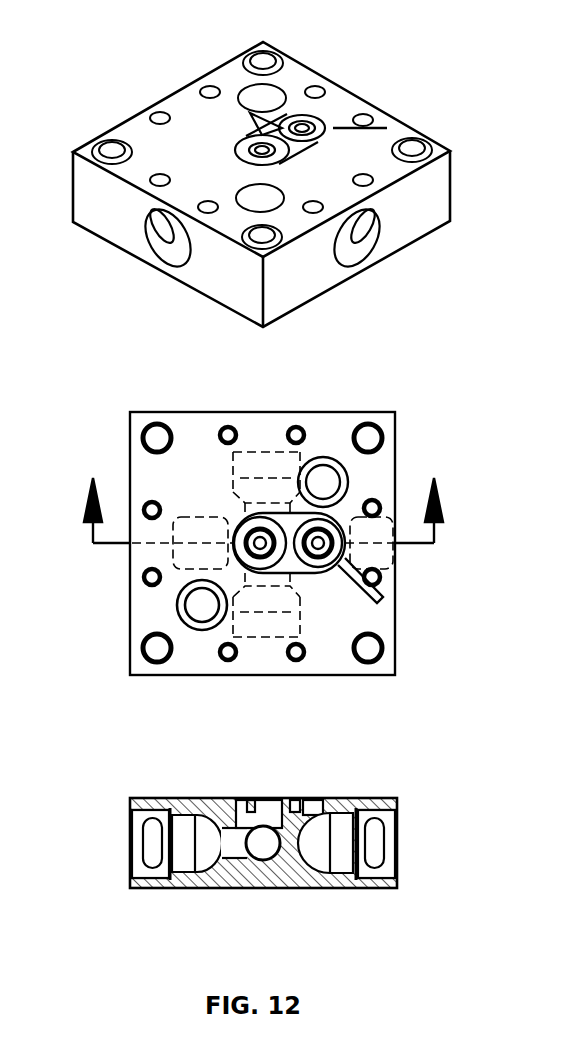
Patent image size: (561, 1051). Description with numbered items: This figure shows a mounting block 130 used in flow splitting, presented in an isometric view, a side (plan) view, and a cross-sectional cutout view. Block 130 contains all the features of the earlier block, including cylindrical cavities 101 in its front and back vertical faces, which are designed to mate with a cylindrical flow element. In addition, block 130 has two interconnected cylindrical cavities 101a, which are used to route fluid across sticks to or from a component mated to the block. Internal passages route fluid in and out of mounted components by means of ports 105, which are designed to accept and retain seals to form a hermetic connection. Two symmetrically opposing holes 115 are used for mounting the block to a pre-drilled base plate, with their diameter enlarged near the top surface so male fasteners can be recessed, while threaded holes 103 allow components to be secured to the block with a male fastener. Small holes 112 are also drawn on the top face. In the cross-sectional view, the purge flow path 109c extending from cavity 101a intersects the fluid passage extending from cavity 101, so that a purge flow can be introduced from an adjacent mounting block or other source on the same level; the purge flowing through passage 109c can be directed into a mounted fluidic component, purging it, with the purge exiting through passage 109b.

The block 130 is at (212, 125).
The port 105 is at (250, 115).
The cylindrical cavity 101 is at (170, 247).
The cylindrical cavity 101a is at (350, 247).
The small through holes 112 is at (289, 424).
The threaded hole 103 is at (370, 438).
The hole 115 is at (202, 600).
The fluid passage 109b is at (337, 832).
The purge flow path 109c is at (265, 842).